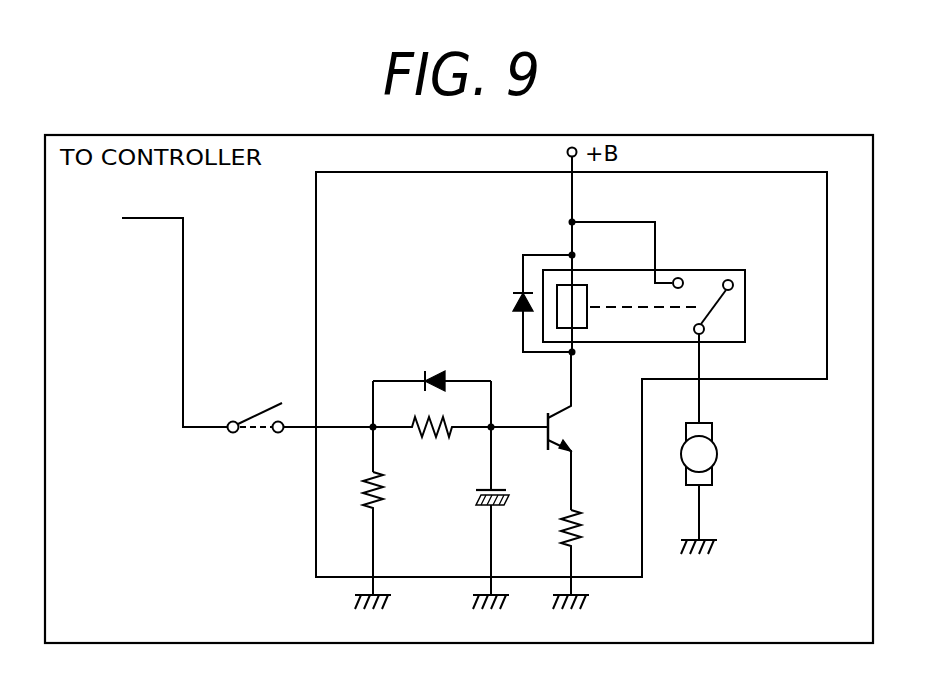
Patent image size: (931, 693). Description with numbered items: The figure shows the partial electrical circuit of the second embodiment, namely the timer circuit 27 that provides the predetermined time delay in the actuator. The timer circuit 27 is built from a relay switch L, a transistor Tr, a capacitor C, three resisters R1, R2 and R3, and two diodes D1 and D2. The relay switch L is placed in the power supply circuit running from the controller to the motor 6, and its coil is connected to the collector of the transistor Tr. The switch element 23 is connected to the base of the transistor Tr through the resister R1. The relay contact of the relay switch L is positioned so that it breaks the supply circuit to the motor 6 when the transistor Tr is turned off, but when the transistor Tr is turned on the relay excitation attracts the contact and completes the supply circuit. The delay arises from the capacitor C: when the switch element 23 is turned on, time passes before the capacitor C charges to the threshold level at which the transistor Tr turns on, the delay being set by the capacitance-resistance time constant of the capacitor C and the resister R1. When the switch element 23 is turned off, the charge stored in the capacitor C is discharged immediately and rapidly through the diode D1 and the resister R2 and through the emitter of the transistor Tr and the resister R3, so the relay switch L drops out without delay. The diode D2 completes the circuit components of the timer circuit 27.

The timer circuit 27 is at (778, 177).
The switch element 23 is at (262, 403).
The motor 6 is at (718, 452).
The relay switch L is at (746, 309).
The transistor Tr is at (547, 431).
The diode D1 is at (427, 370).
The diode D2 is at (512, 302).
The resister R1 is at (432, 443).
The resister R2 is at (354, 533).
The resister R3 is at (590, 552).
The capacitor C is at (499, 531).